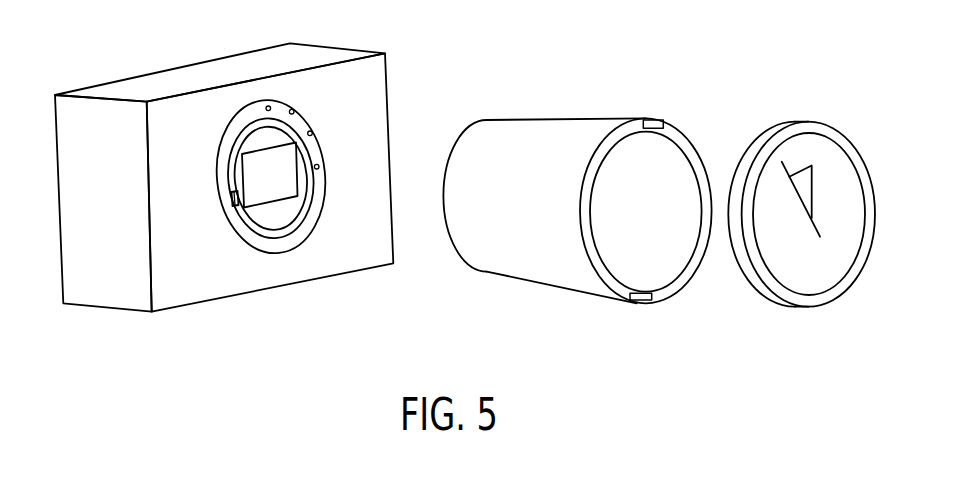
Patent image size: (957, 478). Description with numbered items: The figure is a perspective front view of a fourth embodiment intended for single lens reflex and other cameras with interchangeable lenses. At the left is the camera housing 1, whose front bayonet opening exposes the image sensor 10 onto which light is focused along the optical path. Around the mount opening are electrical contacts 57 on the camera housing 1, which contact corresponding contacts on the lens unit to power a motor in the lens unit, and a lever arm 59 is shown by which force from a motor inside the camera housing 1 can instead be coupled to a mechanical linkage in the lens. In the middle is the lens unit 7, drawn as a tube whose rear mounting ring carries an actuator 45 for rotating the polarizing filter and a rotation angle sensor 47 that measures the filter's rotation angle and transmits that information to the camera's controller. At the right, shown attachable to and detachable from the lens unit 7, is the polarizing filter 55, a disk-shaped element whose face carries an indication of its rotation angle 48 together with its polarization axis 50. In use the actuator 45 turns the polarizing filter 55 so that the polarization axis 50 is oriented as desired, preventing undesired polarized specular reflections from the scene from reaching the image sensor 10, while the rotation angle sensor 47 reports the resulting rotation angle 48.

The camera housing 1 is at (205, 62).
The electrical contacts 57 is at (294, 111).
The image sensor 10 is at (263, 210).
The lever arm 59 is at (232, 198).
The lens unit 7 is at (563, 118).
The actuator 45 is at (653, 118).
The rotation angle sensor 47 is at (640, 303).
The polarizing filter 55 is at (800, 122).
The rotation angle 48 is at (804, 169).
The polarization axis 50 is at (819, 226).